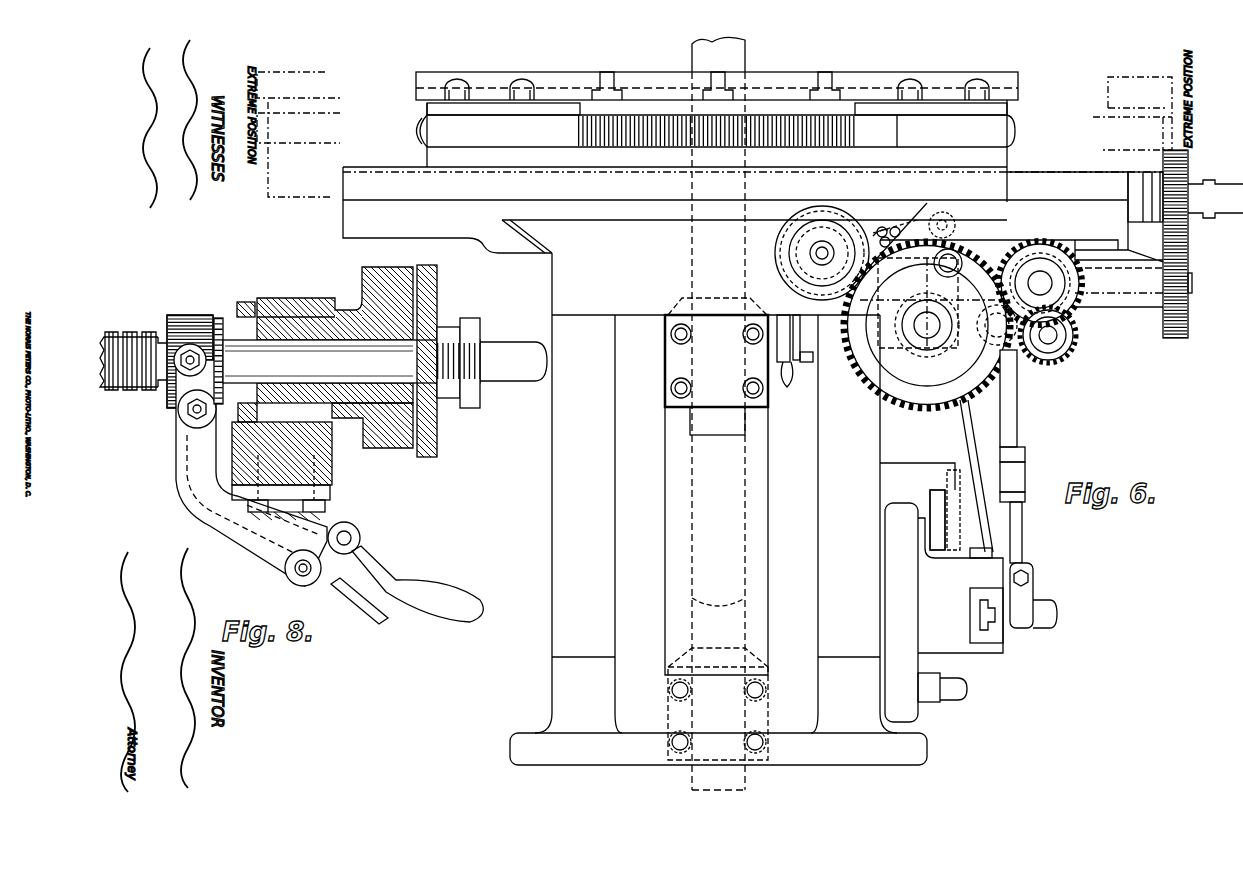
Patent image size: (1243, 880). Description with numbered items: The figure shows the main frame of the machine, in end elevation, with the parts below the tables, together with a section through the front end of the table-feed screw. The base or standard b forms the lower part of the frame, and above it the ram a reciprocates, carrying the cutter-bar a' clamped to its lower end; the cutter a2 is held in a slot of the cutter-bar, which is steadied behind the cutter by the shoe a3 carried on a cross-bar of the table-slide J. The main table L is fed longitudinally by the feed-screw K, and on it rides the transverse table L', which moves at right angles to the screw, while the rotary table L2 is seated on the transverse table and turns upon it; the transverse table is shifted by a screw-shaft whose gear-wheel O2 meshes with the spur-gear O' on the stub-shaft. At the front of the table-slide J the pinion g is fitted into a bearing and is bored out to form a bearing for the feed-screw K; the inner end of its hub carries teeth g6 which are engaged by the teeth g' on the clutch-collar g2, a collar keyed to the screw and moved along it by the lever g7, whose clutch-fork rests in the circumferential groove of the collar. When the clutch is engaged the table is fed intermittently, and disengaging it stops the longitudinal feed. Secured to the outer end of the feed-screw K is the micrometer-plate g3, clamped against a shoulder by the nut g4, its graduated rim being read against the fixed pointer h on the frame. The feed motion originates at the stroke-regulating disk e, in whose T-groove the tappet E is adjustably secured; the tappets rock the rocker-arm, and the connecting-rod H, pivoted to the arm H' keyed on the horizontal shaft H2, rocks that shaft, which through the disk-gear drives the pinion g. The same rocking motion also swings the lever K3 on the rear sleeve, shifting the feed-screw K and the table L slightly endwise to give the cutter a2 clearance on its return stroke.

In FIG. 6, the rotary table L2 is at (704, 87).
In FIG. 6, the transverse table L' is at (753, 183).
In FIG. 6, the main table L is at (753, 214).
In FIG. 6, the table-slide J is at (528, 236).
In FIG. 6, the cutter-bar a' is at (834, 413).
In FIG. 6, the ram a is at (853, 487).
In FIG. 6, the base or standard b is at (718, 509).
In FIG. 8, the lever g7 is at (448, 575).
In FIG. 6, the lever g7 is at (787, 390).
In FIG. 8, the feed-screw K is at (213, 459).
In FIG. 6, the feed-screw K is at (812, 256).
In FIG. 8, the micrometer-plate g3 is at (437, 290).
In FIG. 6, the micrometer-plate g3 is at (822, 214).
In FIG. 6, the fixed pointer h is at (882, 227).
In FIG. 6, the lever K3 is at (902, 233).
In FIG. 6, the horizontal shaft H2 is at (927, 337).
In FIG. 6, the arm H' is at (970, 352).
In FIG. 6, the cutter a2 is at (978, 479).
In FIG. 6, the connecting-rod H is at (1040, 434).
In FIG. 6, the gear-wheel O2 is at (1188, 158).
In FIG. 6, the spur-gear O' is at (1146, 301).
In FIG. 6, the shoe a3 is at (948, 533).
In FIG. 6, the tappet E is at (955, 687).
In FIG. 6, the stroke-regulating disk e is at (925, 714).
In FIG. 8, the clutch-collar g2 is at (180, 318).
In FIG. 8, the teeth g' is at (233, 336).
In FIG. 8, the teeth g6 is at (250, 305).
In FIG. 8, the pinion g is at (385, 392).
In FIG. 8, the nut g4 is at (480, 330).